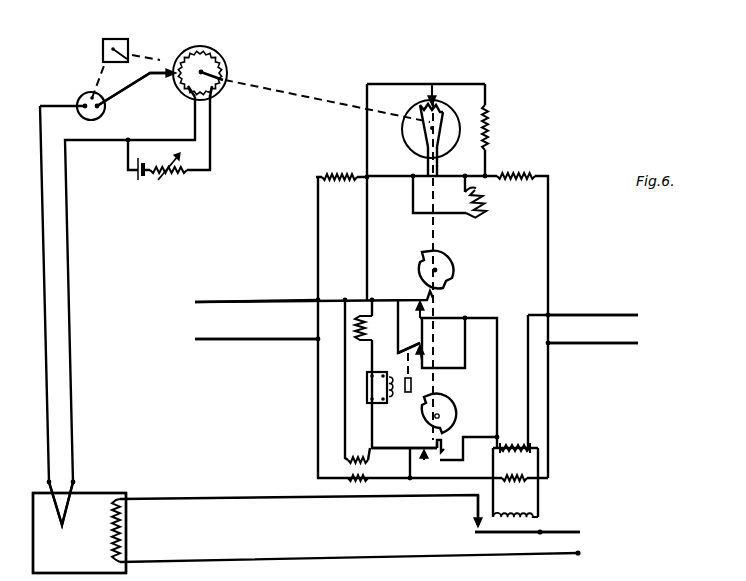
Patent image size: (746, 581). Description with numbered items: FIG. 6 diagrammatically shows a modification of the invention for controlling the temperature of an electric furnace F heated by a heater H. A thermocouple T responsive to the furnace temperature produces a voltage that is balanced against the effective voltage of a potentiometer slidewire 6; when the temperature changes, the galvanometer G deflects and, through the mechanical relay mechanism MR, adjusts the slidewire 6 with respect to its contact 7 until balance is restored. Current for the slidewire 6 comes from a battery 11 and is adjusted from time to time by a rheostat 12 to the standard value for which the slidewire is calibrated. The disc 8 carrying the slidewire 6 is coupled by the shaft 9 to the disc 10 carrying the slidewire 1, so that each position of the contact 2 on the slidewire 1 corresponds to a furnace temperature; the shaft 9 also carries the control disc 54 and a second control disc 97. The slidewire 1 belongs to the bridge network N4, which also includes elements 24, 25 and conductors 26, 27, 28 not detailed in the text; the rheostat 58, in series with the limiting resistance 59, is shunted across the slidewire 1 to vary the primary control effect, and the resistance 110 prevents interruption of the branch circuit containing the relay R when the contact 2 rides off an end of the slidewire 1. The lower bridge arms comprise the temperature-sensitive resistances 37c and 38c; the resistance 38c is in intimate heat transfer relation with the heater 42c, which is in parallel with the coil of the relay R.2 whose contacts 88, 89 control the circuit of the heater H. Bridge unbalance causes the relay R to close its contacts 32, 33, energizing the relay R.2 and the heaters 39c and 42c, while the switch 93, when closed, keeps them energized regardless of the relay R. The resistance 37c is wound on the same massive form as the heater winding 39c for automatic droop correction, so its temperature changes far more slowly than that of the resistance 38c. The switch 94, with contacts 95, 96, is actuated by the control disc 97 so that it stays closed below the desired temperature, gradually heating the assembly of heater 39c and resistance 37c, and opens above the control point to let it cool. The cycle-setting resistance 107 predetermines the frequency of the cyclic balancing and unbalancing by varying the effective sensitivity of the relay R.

The mechanical relay mechanism MR is at (128, 40).
The shaft 9 is at (147, 58).
The potentiometer slidewire 6 is at (215, 58).
The disc 8 is at (224, 77).
The galvanometer G is at (79, 100).
The contact 7 is at (152, 80).
The battery 11 is at (137, 176).
The rheostat 12 is at (172, 176).
The slidewire 1 is at (438, 110).
The contact 2 is at (435, 97).
The disc 10 is at (410, 143).
The resistance 110 is at (490, 135).
The resistor 24 is at (345, 173).
The resistor 25 is at (519, 164).
The limiting resistance 59 is at (470, 201).
The rheostat 58 is at (486, 215).
The network N4 is at (318, 247).
The control disc 54 is at (447, 266).
The conductor 28 is at (248, 301).
The switch 93 is at (405, 299).
The contact 32 is at (410, 340).
The contact 33 is at (425, 355).
The conductor 26 is at (318, 339).
The conductor 27 is at (555, 343).
The cycle-setting resistance 107 is at (355, 333).
The relay R is at (366, 388).
The second control disc 97 is at (447, 410).
The contact 95 is at (436, 442).
The switch 94 is at (404, 438).
The contact 96 is at (428, 463).
The heater winding 39c is at (350, 457).
The heater 42c is at (533, 447).
The resistance 38c is at (510, 480).
The fixed resistance 37c is at (363, 482).
The contact 89 is at (474, 522).
The relay R.2 is at (598, 521).
The contact 88 is at (480, 535).
The thermocouple T is at (70, 497).
The furnace F is at (115, 492).
The heater H is at (120, 530).